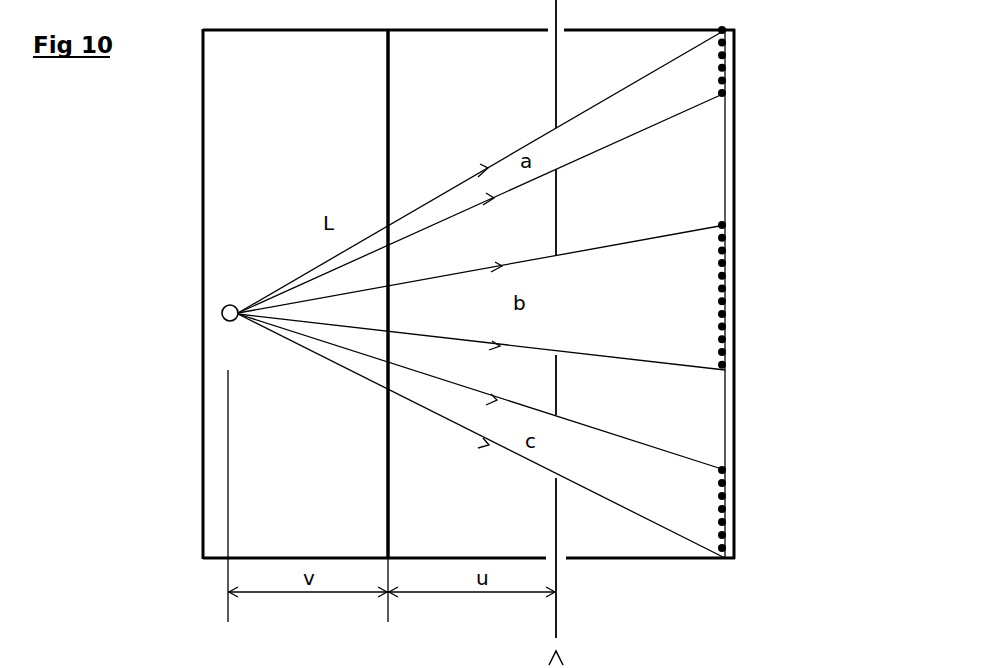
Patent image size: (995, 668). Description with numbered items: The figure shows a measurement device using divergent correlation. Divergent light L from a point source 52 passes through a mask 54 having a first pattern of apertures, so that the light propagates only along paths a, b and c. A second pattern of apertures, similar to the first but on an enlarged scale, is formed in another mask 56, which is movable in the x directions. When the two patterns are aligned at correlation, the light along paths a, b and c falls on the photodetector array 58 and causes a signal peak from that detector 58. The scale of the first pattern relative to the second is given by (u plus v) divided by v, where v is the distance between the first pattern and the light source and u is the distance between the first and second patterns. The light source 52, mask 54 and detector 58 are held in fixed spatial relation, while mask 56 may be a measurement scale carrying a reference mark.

The point source 52 is at (225, 305).
The mask 54 is at (390, 486).
The mask 56 is at (555, 540).
The photodetector array 58 is at (728, 406).